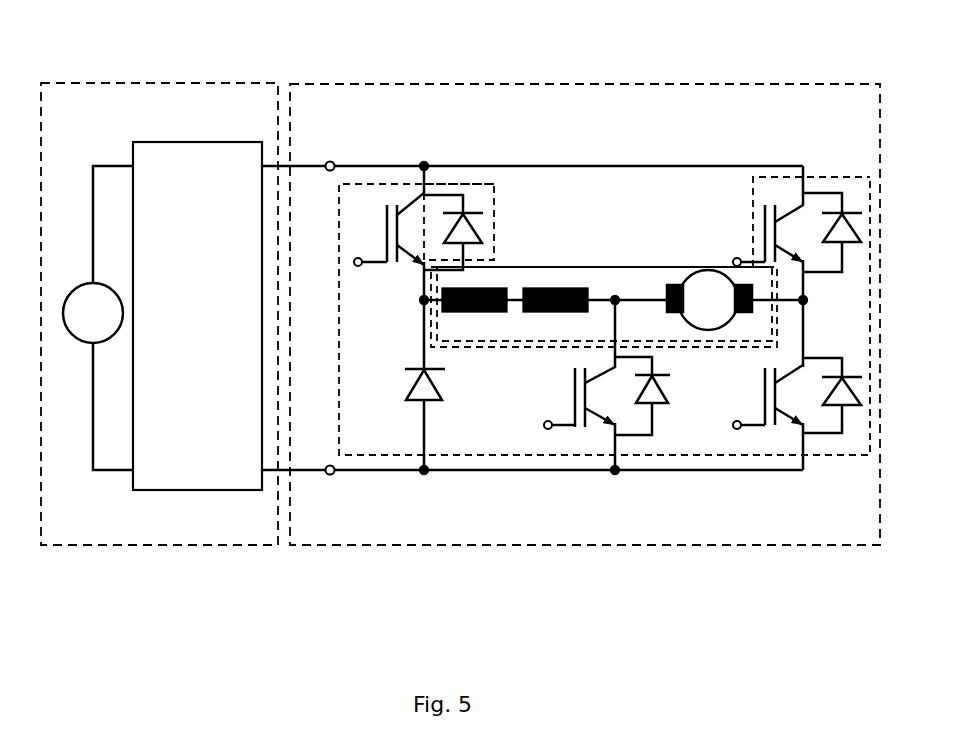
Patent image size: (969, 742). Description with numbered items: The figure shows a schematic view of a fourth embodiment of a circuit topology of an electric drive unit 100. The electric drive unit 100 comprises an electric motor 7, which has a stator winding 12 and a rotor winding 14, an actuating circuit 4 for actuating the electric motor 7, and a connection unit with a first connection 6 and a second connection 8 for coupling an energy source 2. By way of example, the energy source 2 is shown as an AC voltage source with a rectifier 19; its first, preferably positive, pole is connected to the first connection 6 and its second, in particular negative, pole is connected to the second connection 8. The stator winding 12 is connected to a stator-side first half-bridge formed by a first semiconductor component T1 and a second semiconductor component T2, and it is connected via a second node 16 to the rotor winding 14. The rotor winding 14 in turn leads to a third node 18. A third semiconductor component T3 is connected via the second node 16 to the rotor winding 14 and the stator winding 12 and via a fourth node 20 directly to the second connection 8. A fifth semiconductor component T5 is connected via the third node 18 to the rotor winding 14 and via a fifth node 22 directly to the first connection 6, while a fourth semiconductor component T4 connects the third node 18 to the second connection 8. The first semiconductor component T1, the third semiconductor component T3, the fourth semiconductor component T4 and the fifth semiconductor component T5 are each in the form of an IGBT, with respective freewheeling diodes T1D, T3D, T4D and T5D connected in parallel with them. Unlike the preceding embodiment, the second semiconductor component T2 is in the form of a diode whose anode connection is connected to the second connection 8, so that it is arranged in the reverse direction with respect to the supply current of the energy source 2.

The energy source 2 is at (108, 83).
The rectifier 19 is at (160, 142).
The electric drive unit 100 is at (762, 84).
The actuating circuit 4 is at (478, 184).
The first connection 6 is at (328, 160).
The second connection 8 is at (330, 476).
The electric motor 7 is at (497, 267).
The stator winding 12 is at (516, 280).
The rotor winding 14 is at (676, 269).
The second node 16 is at (613, 296).
The third node 18 is at (808, 303).
The fourth node 20 is at (613, 475).
The fifth node 22 is at (423, 160).
The first semiconductor component T1 is at (356, 242).
The freewheeling diode T1D is at (521, 207).
The second semiconductor component T2 is at (388, 382).
The third semiconductor component T3 is at (553, 402).
The freewheeling diode T3D is at (666, 420).
The fourth semiconductor component T4 is at (745, 402).
The freewheeling diode T4D is at (855, 434).
The fifth semiconductor component T5 is at (746, 240).
The freewheeling diode T5D is at (856, 190).